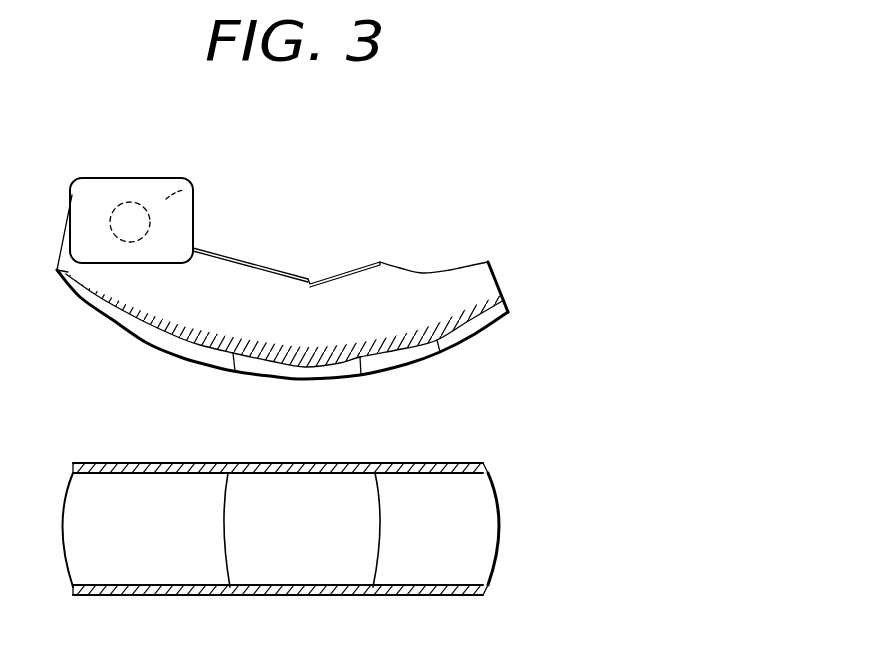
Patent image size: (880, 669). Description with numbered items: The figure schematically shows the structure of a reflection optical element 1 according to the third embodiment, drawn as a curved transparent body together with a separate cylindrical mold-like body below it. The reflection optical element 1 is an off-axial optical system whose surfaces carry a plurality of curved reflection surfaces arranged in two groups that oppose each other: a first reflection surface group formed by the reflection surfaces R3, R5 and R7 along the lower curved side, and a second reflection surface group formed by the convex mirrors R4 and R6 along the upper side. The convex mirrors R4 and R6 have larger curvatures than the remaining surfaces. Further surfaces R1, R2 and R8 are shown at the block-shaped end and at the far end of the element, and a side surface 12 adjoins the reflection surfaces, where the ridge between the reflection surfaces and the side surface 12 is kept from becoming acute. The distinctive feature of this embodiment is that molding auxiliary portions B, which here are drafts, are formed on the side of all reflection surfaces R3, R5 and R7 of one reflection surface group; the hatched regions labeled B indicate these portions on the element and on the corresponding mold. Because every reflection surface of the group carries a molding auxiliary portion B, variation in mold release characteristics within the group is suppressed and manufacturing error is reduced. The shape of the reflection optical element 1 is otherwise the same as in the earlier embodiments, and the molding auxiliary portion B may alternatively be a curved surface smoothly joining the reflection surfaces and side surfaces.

The reflection optical element 1 is at (470, 198).
The surface R1 is at (137, 190).
The surface R2 is at (193, 193).
The reflection surface R3 is at (130, 342).
The convex mirror R4 is at (255, 262).
The reflection surface R5 is at (303, 382).
The convex mirror R6 is at (345, 273).
The reflection surface R7 is at (483, 335).
The surface R8 is at (467, 261).
The side surface 12 is at (418, 283).
The molding auxiliary portion B is at (322, 353).